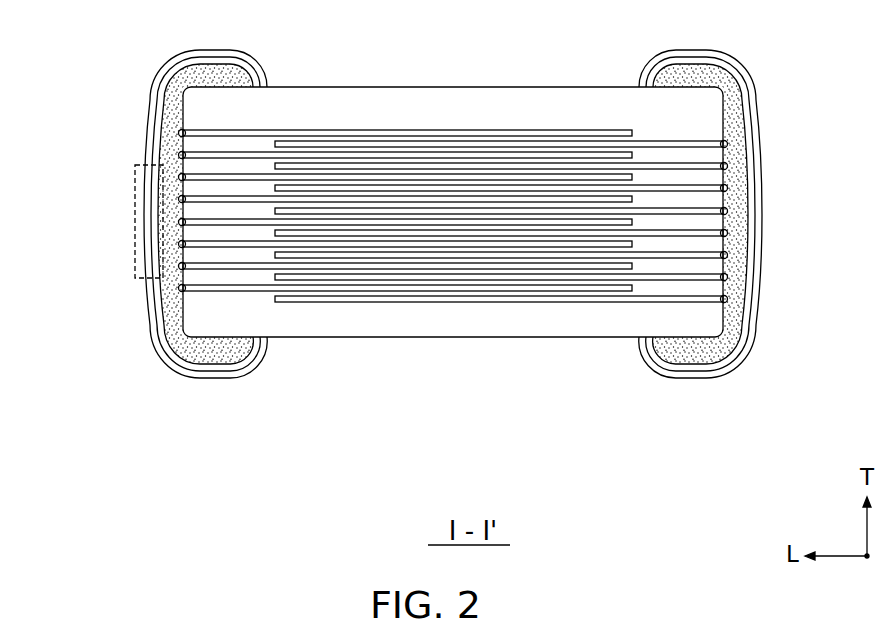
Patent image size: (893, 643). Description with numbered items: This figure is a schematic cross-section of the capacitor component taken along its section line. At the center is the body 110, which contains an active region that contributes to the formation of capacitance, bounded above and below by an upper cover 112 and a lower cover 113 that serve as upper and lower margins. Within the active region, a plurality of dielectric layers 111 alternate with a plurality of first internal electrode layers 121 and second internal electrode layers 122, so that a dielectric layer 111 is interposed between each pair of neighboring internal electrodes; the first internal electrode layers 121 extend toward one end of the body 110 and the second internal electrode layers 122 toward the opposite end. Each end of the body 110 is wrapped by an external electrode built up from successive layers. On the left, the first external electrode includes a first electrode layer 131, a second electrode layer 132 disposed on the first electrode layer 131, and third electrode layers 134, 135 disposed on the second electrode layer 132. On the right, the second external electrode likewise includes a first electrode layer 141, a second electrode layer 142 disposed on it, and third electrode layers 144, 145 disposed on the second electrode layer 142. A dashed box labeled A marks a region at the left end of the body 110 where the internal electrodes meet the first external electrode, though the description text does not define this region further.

The body 110 is at (448, 338).
The dielectric layer 111 is at (430, 140).
The upper cover 112 is at (588, 115).
The lower cover 113 is at (518, 330).
The first internal electrode layer 121 is at (380, 130).
The second internal electrode layer 122 is at (468, 145).
The first electrode layer 131 is at (157, 252).
The second electrode layer 132 is at (222, 365).
The third electrode layer 134 is at (190, 372).
The third electrode layer 135 is at (170, 378).
The first electrode layer 141 is at (750, 252).
The second electrode layer 142 is at (680, 363).
The third electrode layer 144 is at (718, 372).
The third electrode layer 145 is at (735, 378).
The enlarged region A is at (135, 227).